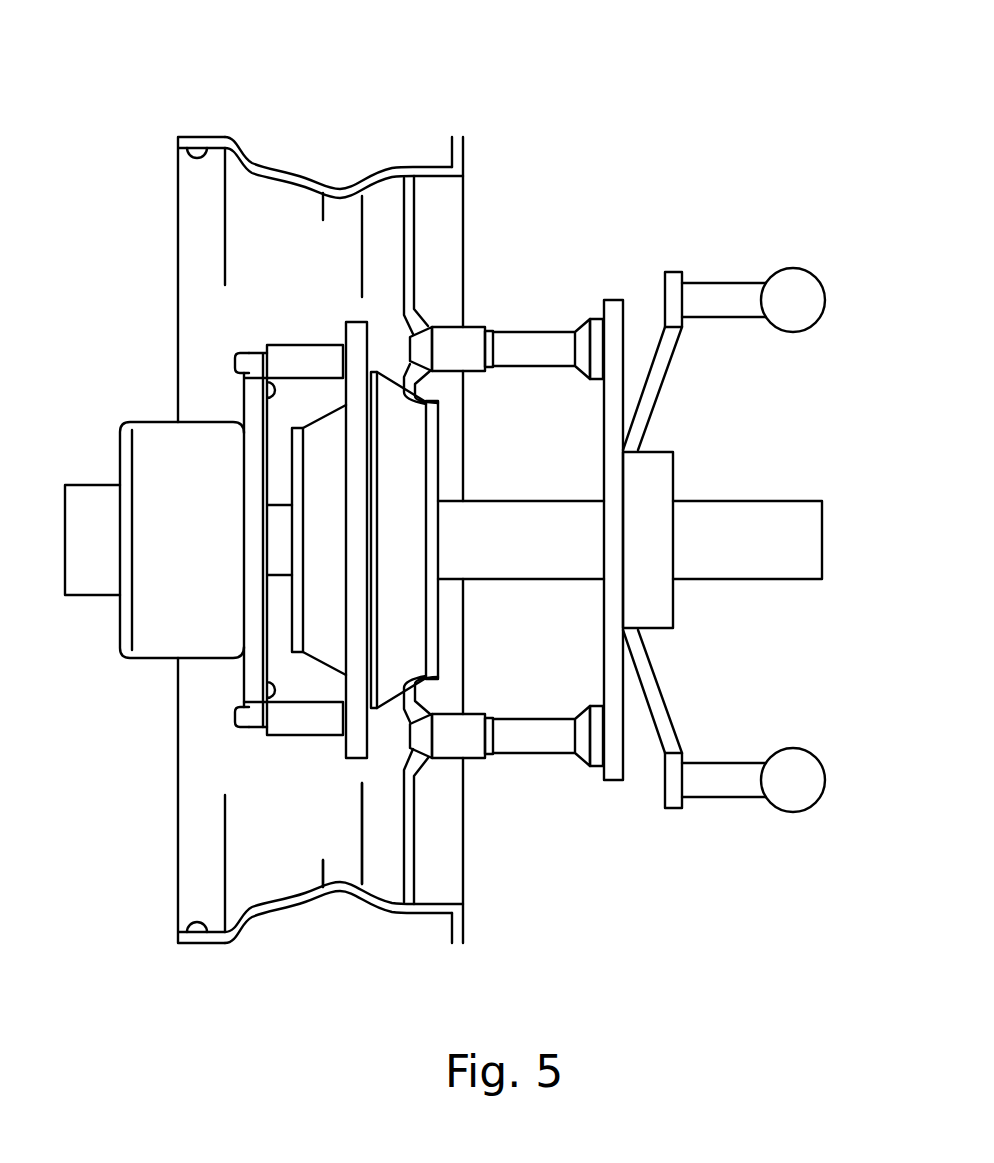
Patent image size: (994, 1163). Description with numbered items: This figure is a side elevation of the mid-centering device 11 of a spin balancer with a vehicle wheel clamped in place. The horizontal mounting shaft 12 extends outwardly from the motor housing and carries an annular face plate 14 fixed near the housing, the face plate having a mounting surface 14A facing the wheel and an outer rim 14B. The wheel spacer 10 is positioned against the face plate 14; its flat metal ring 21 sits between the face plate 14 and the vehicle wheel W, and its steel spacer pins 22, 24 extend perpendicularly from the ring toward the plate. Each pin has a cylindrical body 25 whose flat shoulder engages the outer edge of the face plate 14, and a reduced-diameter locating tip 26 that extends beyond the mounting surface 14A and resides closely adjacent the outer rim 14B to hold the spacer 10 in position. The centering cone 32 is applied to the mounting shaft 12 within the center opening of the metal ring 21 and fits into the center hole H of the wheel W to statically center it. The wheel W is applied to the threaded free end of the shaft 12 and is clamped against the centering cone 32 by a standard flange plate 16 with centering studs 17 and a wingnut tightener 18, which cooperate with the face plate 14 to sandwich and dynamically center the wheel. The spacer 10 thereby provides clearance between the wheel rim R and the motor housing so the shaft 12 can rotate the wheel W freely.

The wheel rim R is at (180, 167).
The vehicle wheel W is at (367, 168).
The center hole H is at (428, 698).
The wheel spacer 10 is at (304, 318).
The mid-centering device 11 is at (145, 692).
The horizontal mounting shaft 12 is at (800, 534).
The annular face plate 14 is at (238, 393).
The mounting surface 14A is at (238, 373).
The outer rim 14B is at (252, 412).
The flange plate 16 is at (627, 333).
The centering studs 17 is at (538, 337).
The wingnut tightener 18 is at (732, 312).
The flat metal ring 21 is at (372, 742).
The spacer pin 22 is at (331, 330).
The spacer pin 24 is at (323, 752).
The cylindrical body 25 is at (290, 352).
The locating tip 26 is at (233, 363).
The centering cone 32 is at (415, 465).